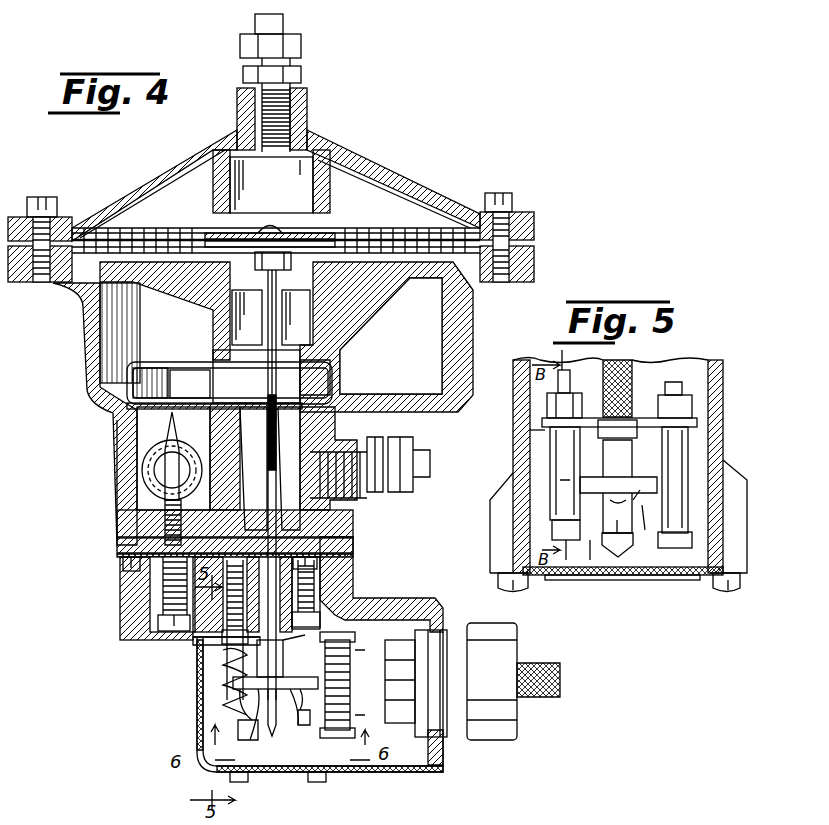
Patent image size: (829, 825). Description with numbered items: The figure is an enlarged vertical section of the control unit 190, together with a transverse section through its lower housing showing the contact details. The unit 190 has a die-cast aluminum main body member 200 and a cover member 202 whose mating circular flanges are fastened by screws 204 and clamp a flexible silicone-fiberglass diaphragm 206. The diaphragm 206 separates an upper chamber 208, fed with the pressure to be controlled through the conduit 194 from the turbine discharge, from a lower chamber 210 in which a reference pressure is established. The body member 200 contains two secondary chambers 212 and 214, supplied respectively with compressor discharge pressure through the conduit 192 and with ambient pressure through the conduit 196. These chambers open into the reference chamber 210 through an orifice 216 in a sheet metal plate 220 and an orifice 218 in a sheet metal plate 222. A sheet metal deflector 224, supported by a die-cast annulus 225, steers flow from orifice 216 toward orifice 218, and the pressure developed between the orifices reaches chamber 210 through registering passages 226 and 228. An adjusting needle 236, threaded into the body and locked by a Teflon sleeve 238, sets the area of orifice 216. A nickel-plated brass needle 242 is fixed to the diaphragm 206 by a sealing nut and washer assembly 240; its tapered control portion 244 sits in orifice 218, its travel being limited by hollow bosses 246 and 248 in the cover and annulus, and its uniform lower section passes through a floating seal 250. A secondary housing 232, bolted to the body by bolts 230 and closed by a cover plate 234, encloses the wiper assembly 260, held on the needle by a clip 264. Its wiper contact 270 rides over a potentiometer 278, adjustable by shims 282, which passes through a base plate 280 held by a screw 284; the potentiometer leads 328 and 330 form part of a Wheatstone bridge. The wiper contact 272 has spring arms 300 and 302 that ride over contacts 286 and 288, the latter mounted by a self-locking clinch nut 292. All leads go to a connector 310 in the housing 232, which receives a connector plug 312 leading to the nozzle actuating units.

In FIG. 4, the control unit 190 is at (111, 448).
In FIG. 4, the conduit 192 is at (180, 448).
In FIG. 4, the conduit 194 is at (283, 22).
In FIG. 4, the conduit 196 is at (400, 495).
In FIG. 4, the main body member 200 is at (85, 340).
In FIG. 4, the cover member 202 is at (148, 175).
In FIG. 4, the screws 204 is at (50, 197).
In FIG. 4, the diaphragm 206 is at (152, 228).
In FIG. 4, the upper chamber 208 is at (395, 200).
In FIG. 4, the lower chamber 210 is at (128, 330).
In FIG. 4, the secondary chamber 212 is at (148, 435).
In FIG. 4, the secondary chamber 214 is at (300, 420).
In FIG. 4, the orifice 216 is at (165, 400).
In FIG. 4, the orifice 218 is at (265, 425).
In FIG. 4, the sheet metal plate 220 is at (197, 400).
In FIG. 4, the sheet metal plate 222 is at (320, 395).
In FIG. 4, the sheet metal deflector 224 is at (172, 362).
In FIG. 4, the annulus 225 is at (383, 298).
In FIG. 4, the passage 226 is at (300, 392).
In FIG. 4, the passage 228 is at (260, 330).
In FIG. 4, the bolts 230 is at (120, 565).
In FIG. 4, the secondary housing 232 is at (375, 598).
In FIG. 5, the secondary housing 232 is at (727, 390).
In FIG. 4, the cover plate 234 is at (193, 694).
In FIG. 4, the adjusting needle 236 is at (148, 608).
In FIG. 4, the Teflon sleeve 238 is at (192, 537).
In FIG. 4, the sealing nut and washer assembly 240 is at (300, 232).
In FIG. 4, the needle 242 is at (292, 325).
In FIG. 4, the tapered control portion 244 is at (258, 392).
In FIG. 4, the hollow boss 246 is at (240, 178).
In FIG. 4, the hollow boss 248 is at (215, 300).
In FIG. 4, the floating seal 250 is at (290, 530).
In FIG. 4, the wiper assembly 260 is at (284, 672).
In FIG. 5, the clip 264 is at (600, 545).
In FIG. 4, the wiper contact 270 is at (291, 719).
In FIG. 4, the wiper contact 272 is at (232, 683).
In FIG. 5, the wiper contact 272 is at (643, 418).
In FIG. 4, the potentiometer 278 is at (365, 690).
In FIG. 5, the potentiometer 278 is at (644, 528).
In FIG. 4, the base plate 280 is at (318, 612).
In FIG. 5, the base plate 280 is at (530, 426).
In FIG. 4, the shims 282 is at (380, 598).
In FIG. 4, the screw 284 is at (222, 642).
In FIG. 5, the contact 286 is at (694, 445).
In FIG. 4, the contact 288 is at (218, 708).
In FIG. 5, the contact 288 is at (546, 483).
In FIG. 5, the clinch nut 292 is at (545, 408).
In FIG. 5, the spring arm 300 is at (664, 535).
In FIG. 5, the spring arm 302 is at (586, 549).
In FIG. 4, the connector 310 is at (445, 745).
In FIG. 4, the connector plug 312 is at (500, 740).
In FIG. 4, the lead 328 is at (375, 660).
In FIG. 4, the lead 330 is at (380, 720).